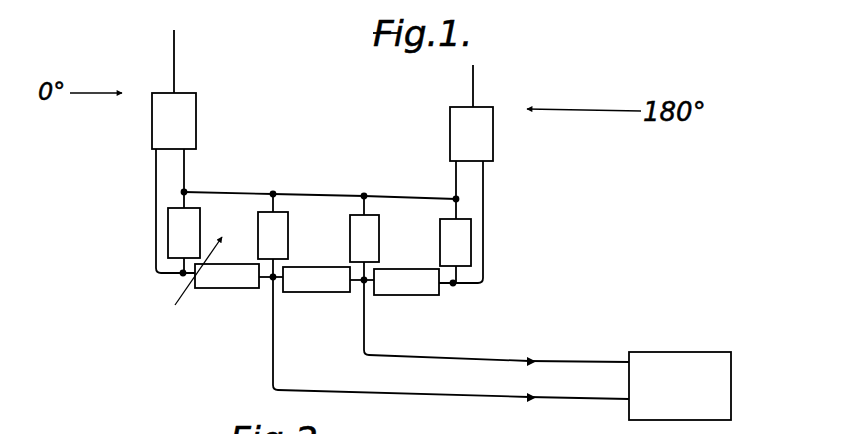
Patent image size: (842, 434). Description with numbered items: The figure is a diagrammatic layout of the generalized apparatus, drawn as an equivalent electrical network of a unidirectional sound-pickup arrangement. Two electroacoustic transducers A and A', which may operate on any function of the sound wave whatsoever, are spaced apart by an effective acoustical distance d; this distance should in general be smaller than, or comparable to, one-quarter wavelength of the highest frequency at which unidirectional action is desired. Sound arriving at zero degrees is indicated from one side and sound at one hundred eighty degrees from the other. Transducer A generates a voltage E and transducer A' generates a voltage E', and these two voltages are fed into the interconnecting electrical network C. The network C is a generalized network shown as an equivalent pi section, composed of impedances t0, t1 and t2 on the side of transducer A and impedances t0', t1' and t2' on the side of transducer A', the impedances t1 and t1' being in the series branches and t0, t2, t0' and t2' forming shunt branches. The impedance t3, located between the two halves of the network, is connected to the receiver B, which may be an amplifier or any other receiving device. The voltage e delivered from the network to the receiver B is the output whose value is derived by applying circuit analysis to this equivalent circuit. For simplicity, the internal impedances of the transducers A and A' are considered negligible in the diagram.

The electroacoustic transducer A is at (189, 121).
The electroacoustic transducer A' is at (438, 131).
The voltage E is at (175, 211).
The voltage E' is at (461, 222).
The impedance Z0 t0 is at (161, 240).
The impedance Z0' t0' is at (478, 251).
The impedance Z1 t1 is at (239, 302).
The impedance Z1' t1' is at (407, 304).
The impedance Z2 t2 is at (255, 235).
The impedance Z2' t2' is at (383, 238).
The impedance Z3 t3 is at (318, 280).
The interconnecting electrical network C is at (182, 284).
The effective acoustical distance d is at (473, 86).
The voltage delivered to the receiving apparatus e is at (451, 339).
The receiver B is at (717, 383).